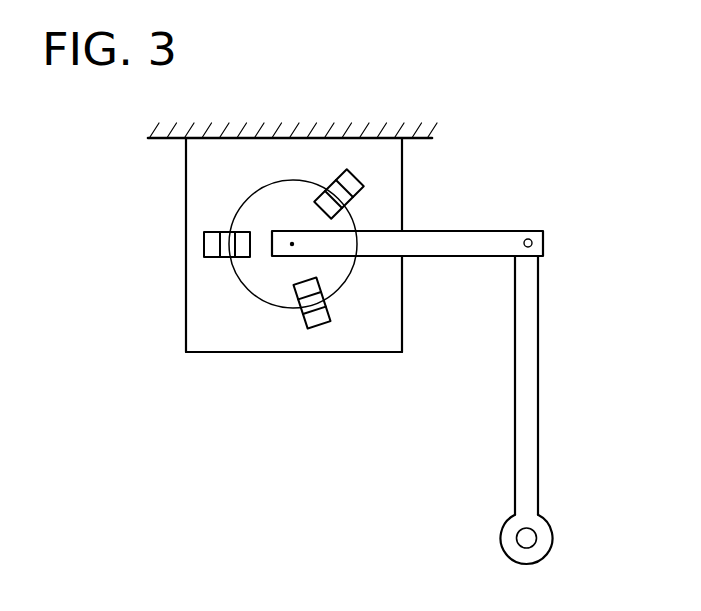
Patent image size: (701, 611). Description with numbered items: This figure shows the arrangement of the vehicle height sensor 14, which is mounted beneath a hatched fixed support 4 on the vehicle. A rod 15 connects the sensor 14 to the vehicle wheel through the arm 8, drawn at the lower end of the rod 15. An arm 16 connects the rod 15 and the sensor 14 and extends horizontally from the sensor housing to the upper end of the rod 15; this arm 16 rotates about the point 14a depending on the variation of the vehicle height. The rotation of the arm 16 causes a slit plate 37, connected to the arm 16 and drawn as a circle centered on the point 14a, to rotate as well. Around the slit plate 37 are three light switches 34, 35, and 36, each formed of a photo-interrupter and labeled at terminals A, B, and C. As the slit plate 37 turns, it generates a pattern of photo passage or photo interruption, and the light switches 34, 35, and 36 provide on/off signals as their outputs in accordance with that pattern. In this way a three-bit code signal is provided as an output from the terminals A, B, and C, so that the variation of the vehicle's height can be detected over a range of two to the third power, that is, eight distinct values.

The fixed support / frame 4 is at (352, 123).
The vehicle height sensor 14 is at (297, 353).
The point 14a is at (291, 243).
The slit plate 37 is at (251, 292).
The light switch 34 is at (215, 258).
The light switch 35 is at (330, 320).
The light switch 36 is at (362, 184).
The arm 16 is at (485, 231).
The rod 15 is at (539, 385).
The arm 8 is at (523, 540).